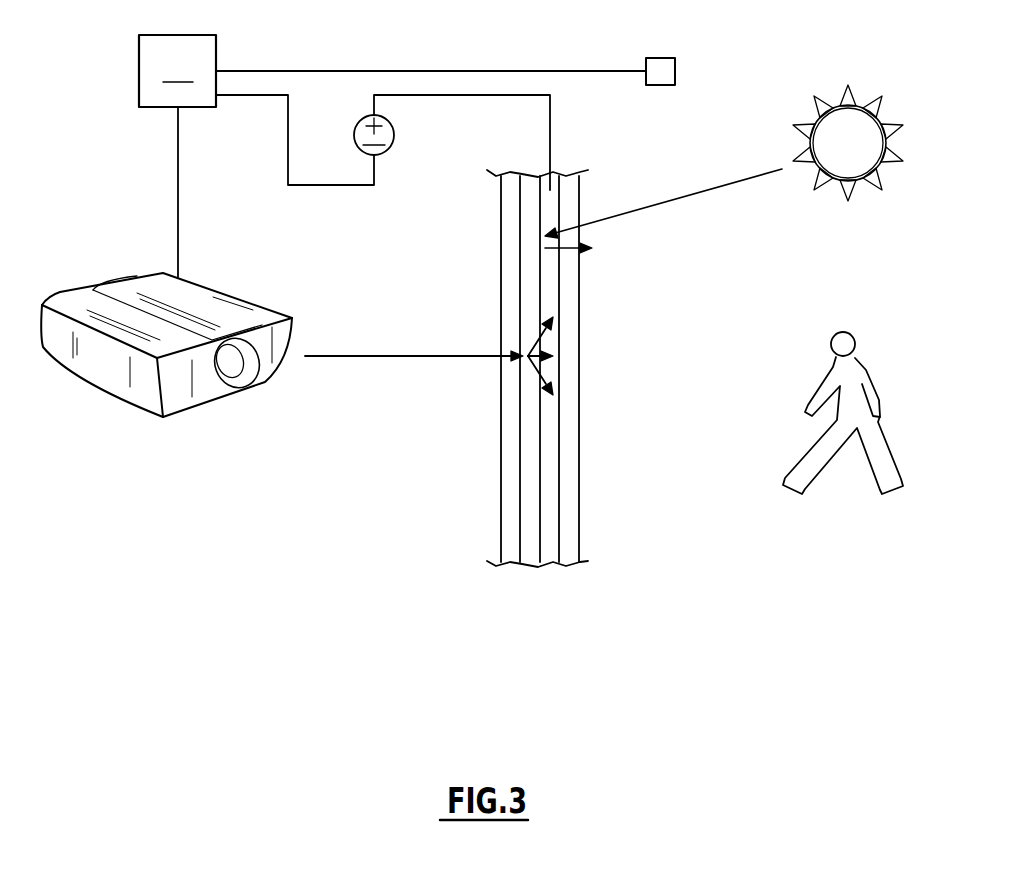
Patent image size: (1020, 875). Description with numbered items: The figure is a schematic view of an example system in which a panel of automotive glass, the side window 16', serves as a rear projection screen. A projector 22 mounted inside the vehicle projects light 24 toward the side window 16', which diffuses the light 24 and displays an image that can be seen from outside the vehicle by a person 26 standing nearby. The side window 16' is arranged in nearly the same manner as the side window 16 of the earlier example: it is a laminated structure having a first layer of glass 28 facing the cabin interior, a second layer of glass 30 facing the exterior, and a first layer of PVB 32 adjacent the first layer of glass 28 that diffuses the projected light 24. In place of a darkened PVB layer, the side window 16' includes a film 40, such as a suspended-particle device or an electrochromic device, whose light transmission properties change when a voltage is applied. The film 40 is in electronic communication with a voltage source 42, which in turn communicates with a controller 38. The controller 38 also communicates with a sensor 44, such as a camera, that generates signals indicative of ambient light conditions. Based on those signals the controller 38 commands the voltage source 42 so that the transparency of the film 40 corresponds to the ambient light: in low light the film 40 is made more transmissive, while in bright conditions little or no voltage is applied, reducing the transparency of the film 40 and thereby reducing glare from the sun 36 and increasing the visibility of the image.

The side window 16' is at (545, 407).
The side window 16 is at (545, 407).
The projector 22 is at (85, 392).
The light 24 is at (407, 356).
The person 26 is at (861, 326).
The first layer of glass 28 is at (508, 462).
The second layer of glass 30 is at (570, 482).
The first layer of PVB 32 is at (530, 502).
The sun 36 is at (871, 82).
The controller 38 is at (392, 156).
The film 40 is at (548, 533).
The voltage source 42 is at (394, 143).
The sensor 44 is at (661, 58).